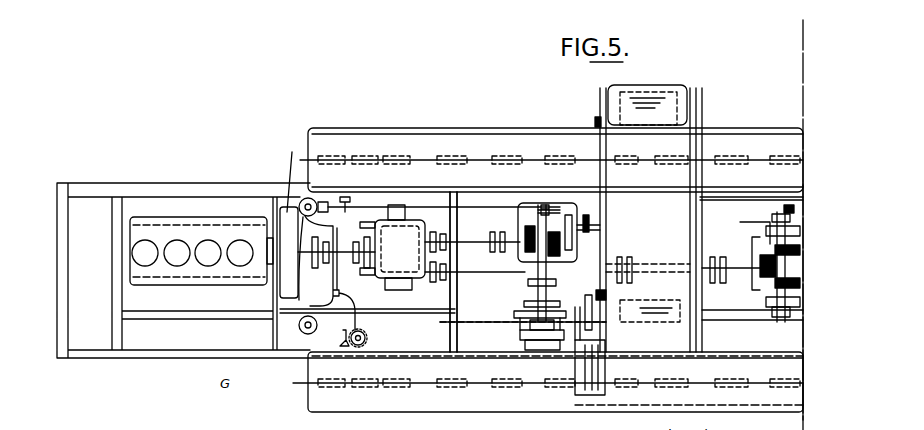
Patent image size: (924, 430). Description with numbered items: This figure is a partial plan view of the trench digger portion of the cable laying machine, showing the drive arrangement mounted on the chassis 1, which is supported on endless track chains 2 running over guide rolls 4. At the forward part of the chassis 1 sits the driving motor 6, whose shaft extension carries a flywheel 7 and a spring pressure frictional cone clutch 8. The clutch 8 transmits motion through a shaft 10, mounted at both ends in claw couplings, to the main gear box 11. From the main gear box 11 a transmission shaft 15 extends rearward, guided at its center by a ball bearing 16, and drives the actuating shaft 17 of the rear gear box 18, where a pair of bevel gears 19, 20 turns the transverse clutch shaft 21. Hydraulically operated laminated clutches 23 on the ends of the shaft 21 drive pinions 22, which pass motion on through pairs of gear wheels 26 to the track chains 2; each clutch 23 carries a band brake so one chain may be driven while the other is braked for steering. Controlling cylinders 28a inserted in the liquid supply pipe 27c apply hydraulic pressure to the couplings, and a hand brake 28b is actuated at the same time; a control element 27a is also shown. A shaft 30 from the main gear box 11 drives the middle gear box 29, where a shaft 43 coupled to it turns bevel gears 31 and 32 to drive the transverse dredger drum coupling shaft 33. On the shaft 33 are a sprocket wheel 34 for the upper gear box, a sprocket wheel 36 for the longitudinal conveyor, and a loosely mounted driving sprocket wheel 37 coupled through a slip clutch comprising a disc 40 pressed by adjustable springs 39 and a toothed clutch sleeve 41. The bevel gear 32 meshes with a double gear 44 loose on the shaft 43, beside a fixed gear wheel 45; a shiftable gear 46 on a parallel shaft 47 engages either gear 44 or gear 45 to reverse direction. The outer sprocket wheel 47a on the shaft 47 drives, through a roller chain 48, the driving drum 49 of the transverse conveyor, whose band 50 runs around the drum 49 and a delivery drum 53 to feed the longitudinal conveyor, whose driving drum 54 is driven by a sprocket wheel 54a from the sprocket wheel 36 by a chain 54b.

The chassis 1 is at (180, 190).
The endless track chains 2 is at (353, 140).
The guide rolls 4 is at (332, 157).
The driving motor 6 is at (222, 237).
The flywheel 7 is at (289, 207).
The spring pressure frictional cone clutch 8 is at (287, 173).
The shaft 10 is at (345, 250).
The main gear box 11 is at (410, 228).
The transmission shaft 15 is at (458, 268).
The ball bearing 16 is at (630, 260).
The actuating shaft 17 is at (735, 262).
The rear gear box 18 is at (756, 263).
The bevel gear 19 is at (760, 270).
The bevel gear 20 is at (775, 247).
The transverse clutch shaft 21 is at (790, 270).
The pinions 22 is at (784, 209).
The hydraulically operated laminated clutches 23 is at (784, 214).
The gear wheels 26 is at (798, 186).
The control valve 27a is at (368, 338).
The liquid supply pipe 27c is at (632, 208).
The controlling cylinders 28a is at (311, 204).
The hand brake 28b is at (770, 228).
The gear box 29 is at (524, 214).
The shaft 30 is at (490, 242).
The bevel gear 31 is at (522, 252).
The bevel gear 32 is at (527, 258).
The dredger drum coupling shaft 33 is at (524, 304).
The sprocket wheel 34 is at (548, 285).
The sprocket wheel 36 is at (537, 284).
The driving sprocket wheel 37 is at (514, 314).
The adjustable springs 39 is at (530, 328).
The disc 40 is at (520, 333).
The toothed clutch sleeve 41 is at (528, 350).
The shaft 43 is at (518, 207).
The double gear 44 is at (549, 214).
The gear wheel 45 is at (572, 247).
The shiftable gear 46 is at (600, 230).
The shaft 47 is at (542, 210).
The outer sprocket wheel 47a is at (590, 223).
The roller chain 48 is at (595, 123).
The driving drum 49 is at (647, 105).
The band 50 is at (651, 220).
The delivery drum 53 is at (650, 309).
The driving drum 54 is at (590, 351).
The sprocket wheel 54a is at (606, 296).
The chain 54b is at (585, 312).